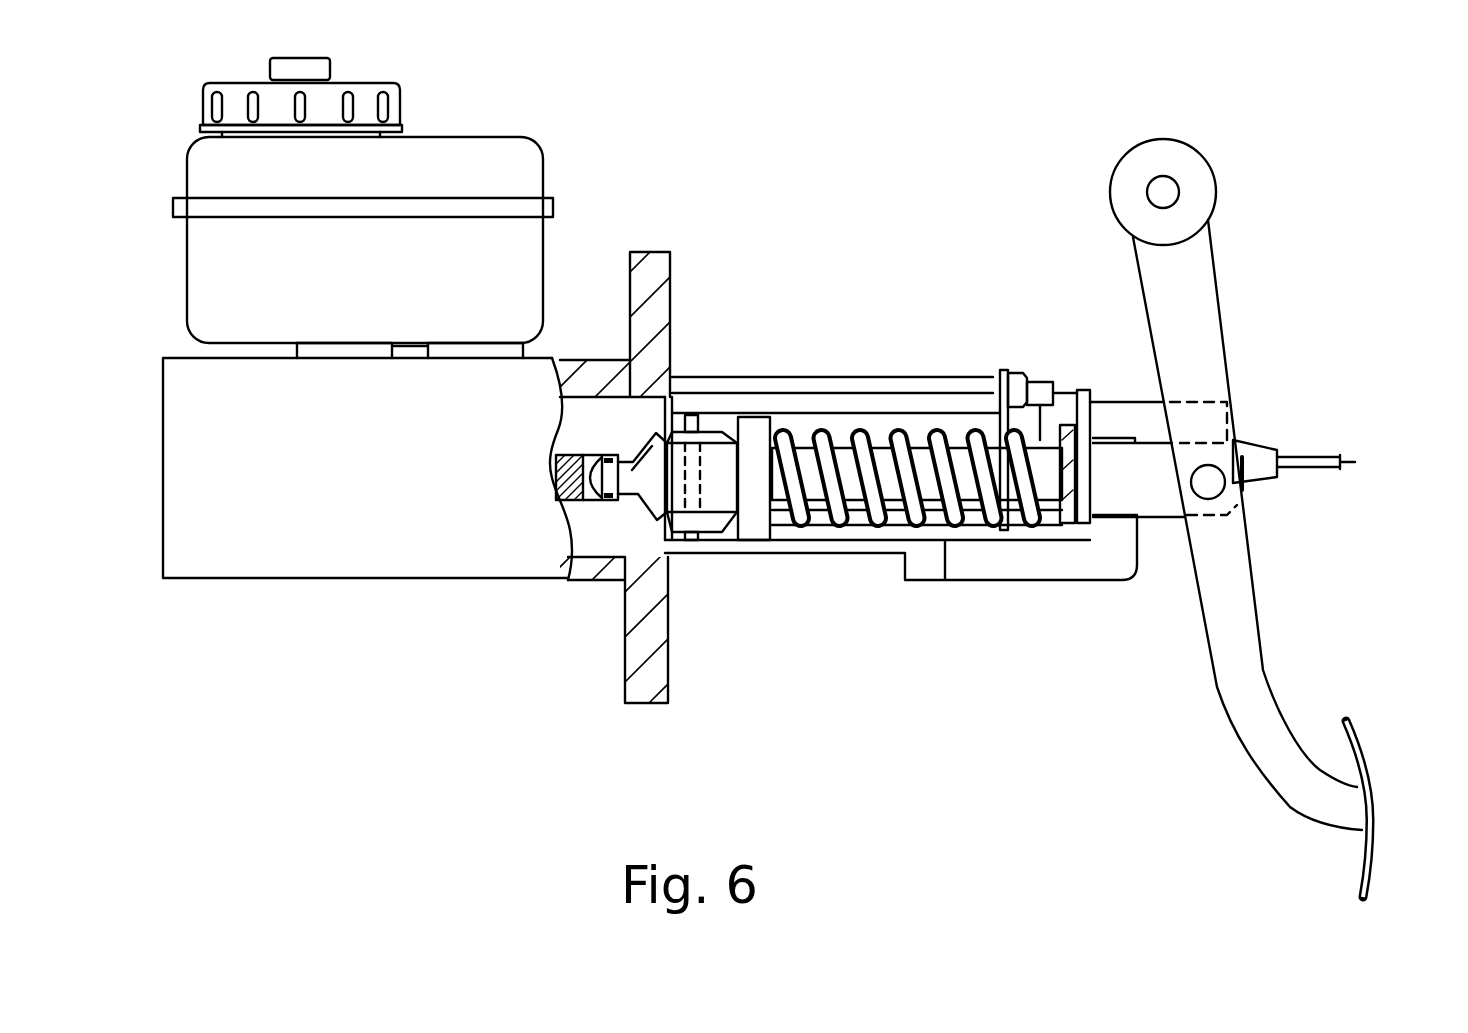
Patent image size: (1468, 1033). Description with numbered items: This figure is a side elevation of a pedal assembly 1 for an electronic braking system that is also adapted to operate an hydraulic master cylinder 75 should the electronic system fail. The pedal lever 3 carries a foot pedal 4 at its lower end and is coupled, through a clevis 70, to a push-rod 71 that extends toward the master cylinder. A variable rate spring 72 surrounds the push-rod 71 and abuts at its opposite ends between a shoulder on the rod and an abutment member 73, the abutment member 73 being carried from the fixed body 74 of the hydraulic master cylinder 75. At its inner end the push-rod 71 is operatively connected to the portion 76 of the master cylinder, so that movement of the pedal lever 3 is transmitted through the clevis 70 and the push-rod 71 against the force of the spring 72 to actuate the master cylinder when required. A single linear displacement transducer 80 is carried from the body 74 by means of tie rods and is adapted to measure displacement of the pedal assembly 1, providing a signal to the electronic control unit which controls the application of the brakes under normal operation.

The pedal assembly 1 is at (1240, 586).
The pedal lever 3 is at (1255, 692).
The foot pedal 4 is at (1172, 192).
The clevis 70 is at (1155, 508).
The push-rod 71 is at (822, 505).
The variable rate spring 72 is at (827, 440).
The abutment member 73 is at (757, 425).
The fixed body 74 is at (662, 667).
The hydraulic master cylinder 75 is at (389, 549).
The portion of the master cylinder 76 is at (573, 502).
The linear displacement transducer 80 is at (1122, 412).